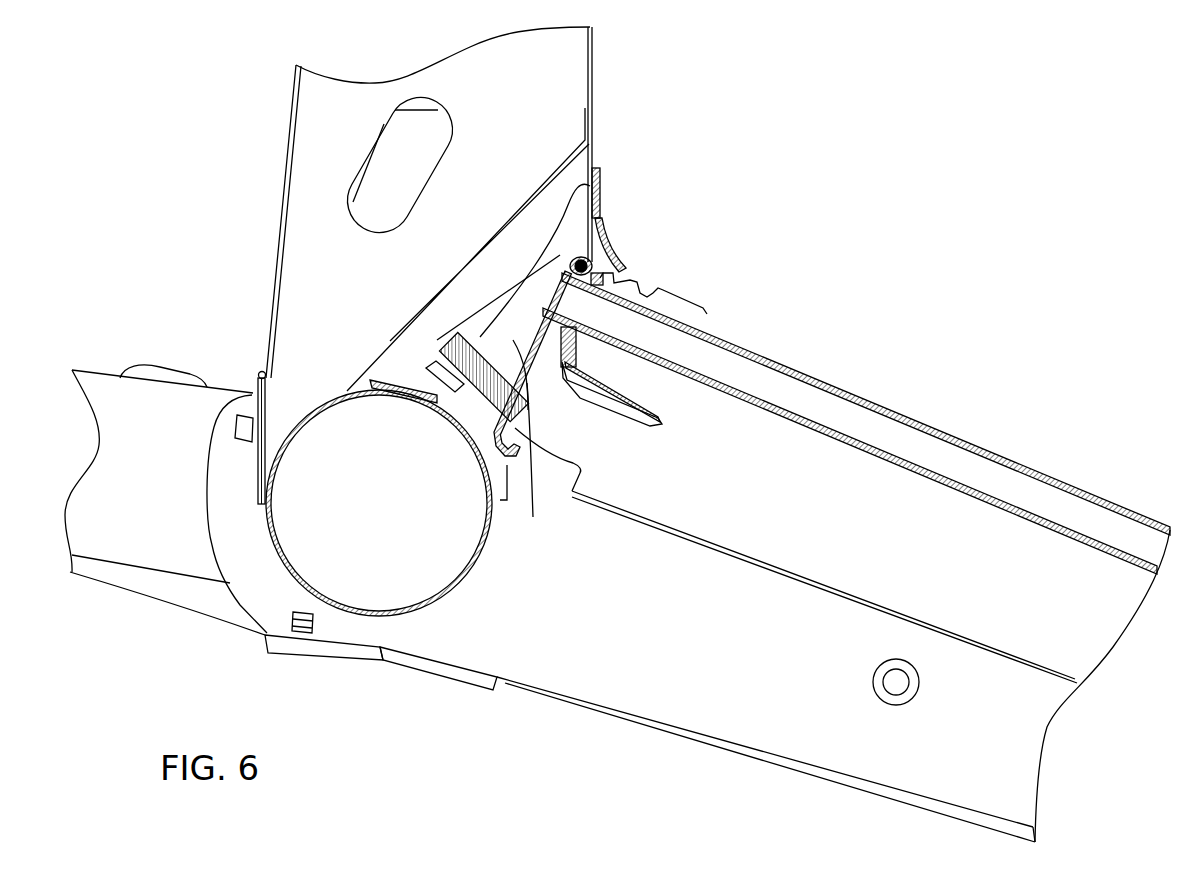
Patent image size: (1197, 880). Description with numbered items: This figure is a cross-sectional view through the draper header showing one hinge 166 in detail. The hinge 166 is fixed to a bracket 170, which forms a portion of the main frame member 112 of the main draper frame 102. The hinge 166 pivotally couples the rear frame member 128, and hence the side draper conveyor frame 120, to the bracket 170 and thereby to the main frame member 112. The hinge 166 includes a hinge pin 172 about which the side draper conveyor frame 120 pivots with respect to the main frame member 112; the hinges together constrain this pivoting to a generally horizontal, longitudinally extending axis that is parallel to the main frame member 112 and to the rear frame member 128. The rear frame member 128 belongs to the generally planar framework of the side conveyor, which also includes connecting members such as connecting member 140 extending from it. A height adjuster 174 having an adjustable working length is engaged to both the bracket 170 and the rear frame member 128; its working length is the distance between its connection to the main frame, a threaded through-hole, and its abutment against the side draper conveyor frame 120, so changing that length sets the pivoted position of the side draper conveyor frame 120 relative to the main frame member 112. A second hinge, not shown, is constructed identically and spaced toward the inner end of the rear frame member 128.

The main draper frame 102 is at (252, 272).
The main frame member 112 is at (467, 572).
The side draper conveyor frame 120 is at (1008, 438).
The rear frame member 128 is at (527, 405).
The connecting member 140 is at (840, 388).
The hinge 166 is at (648, 167).
The bracket 170 is at (497, 335).
The hinge pin 172 is at (575, 255).
The height adjuster 174 is at (455, 393).